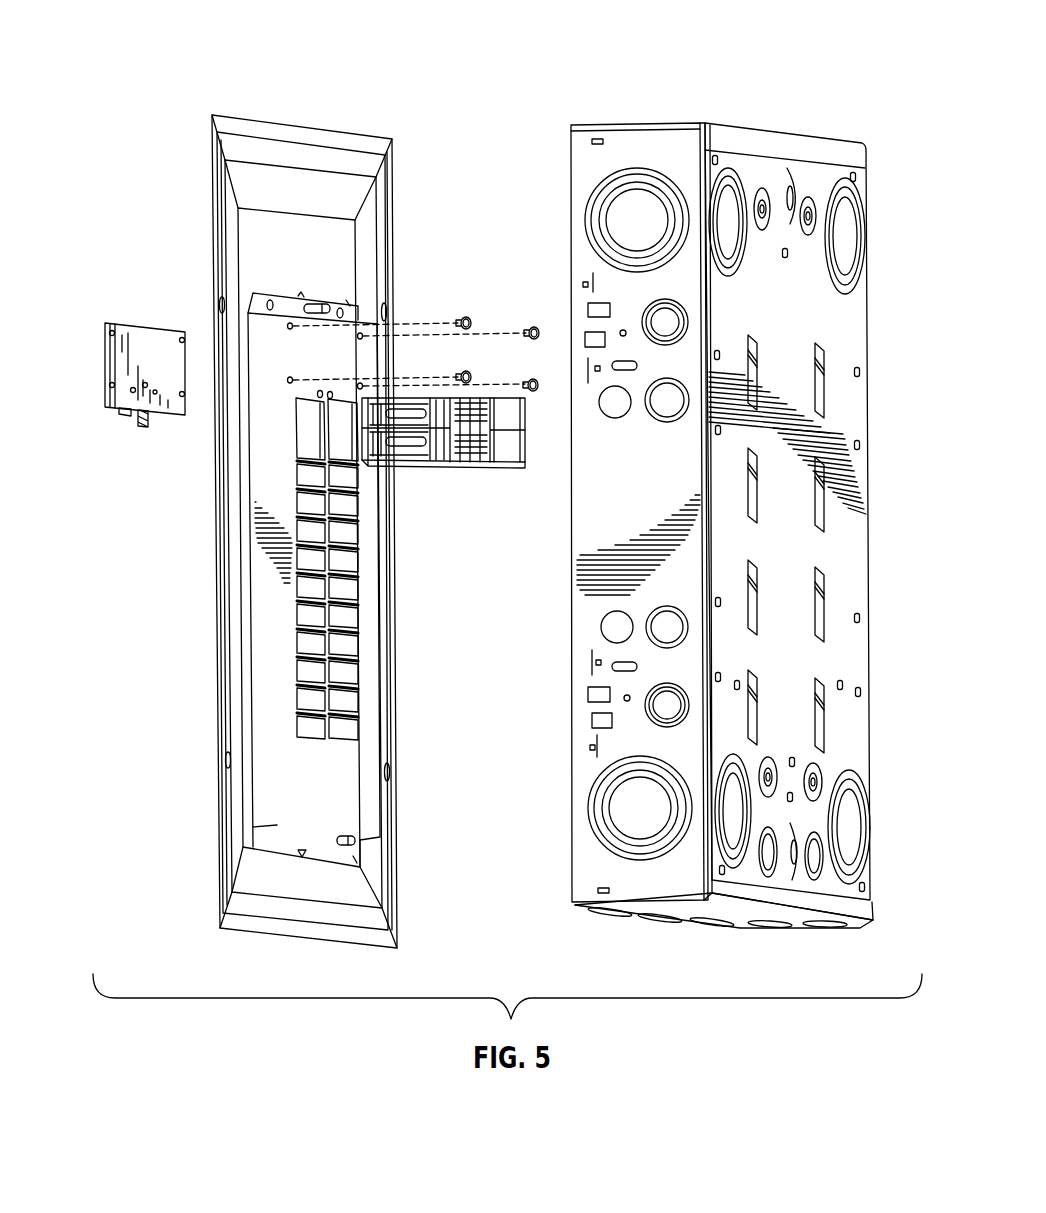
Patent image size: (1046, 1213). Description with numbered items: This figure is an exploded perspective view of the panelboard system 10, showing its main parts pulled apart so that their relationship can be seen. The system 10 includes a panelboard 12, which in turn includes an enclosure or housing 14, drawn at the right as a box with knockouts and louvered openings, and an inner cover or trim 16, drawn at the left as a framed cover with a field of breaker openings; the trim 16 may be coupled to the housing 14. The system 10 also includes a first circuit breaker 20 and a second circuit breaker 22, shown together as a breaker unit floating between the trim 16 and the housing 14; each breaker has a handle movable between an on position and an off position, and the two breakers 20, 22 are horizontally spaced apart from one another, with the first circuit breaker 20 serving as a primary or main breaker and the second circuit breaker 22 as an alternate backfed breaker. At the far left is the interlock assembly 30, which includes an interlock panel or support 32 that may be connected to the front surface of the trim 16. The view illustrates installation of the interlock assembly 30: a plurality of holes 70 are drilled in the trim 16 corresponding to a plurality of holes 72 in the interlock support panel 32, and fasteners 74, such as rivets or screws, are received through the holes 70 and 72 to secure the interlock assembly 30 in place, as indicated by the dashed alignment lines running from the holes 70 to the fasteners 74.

The panelboard system 10 is at (753, 474).
The panelboard 12 is at (648, 86).
The enclosure or housing 14 is at (888, 128).
The inner cover or trim 16 is at (384, 115).
The first circuit breaker 20 is at (443, 494).
The second circuit breaker 22 is at (443, 433).
The interlock assembly 30 is at (127, 378).
The interlock panel or support 32 is at (150, 328).
The holes 70 is at (287, 381).
The holes 72 is at (110, 385).
The fasteners 74 is at (534, 326).